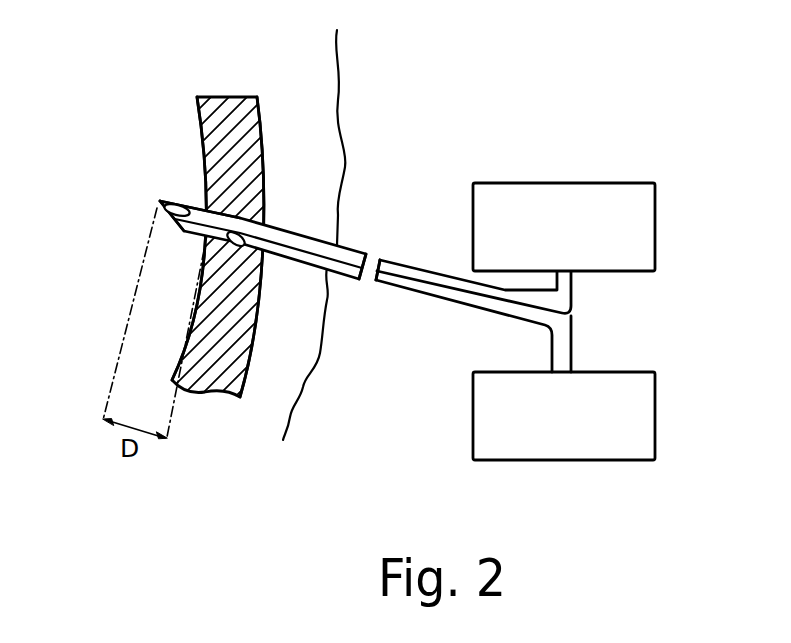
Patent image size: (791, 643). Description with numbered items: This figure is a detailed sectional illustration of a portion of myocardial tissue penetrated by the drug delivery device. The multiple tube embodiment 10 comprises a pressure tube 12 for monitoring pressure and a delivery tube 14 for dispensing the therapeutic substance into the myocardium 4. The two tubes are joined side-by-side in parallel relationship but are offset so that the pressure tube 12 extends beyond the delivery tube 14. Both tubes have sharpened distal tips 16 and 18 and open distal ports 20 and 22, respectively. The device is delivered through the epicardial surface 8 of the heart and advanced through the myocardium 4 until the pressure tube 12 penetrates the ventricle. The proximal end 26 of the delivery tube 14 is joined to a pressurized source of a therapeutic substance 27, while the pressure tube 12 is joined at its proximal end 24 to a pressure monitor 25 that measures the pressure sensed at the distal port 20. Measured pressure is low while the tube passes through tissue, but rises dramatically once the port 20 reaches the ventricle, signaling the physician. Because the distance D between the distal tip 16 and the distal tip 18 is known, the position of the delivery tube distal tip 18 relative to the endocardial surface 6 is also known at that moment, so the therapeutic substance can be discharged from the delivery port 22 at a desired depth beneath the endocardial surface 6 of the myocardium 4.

The myocardium 4 is at (232, 97).
The endocardial surface 6 is at (197, 108).
The epicardial surface 8 is at (262, 131).
The multiple tube embodiment 10 is at (311, 254).
The pressure tube 12 is at (313, 240).
The delivery tube 14 is at (297, 262).
The distal tip of pressure tube 16 is at (168, 205).
The distal tip of delivery tube 18 is at (205, 230).
The distal port of pressure tube 20 is at (160, 204).
The distal port of delivery tube 22 is at (226, 237).
The proximal end of pressure tube 24 is at (396, 260).
The proximal end of delivery tube 26 is at (400, 286).
The pressure monitor 25 is at (565, 183).
The pressurized source of therapeutic substance 27 is at (611, 372).